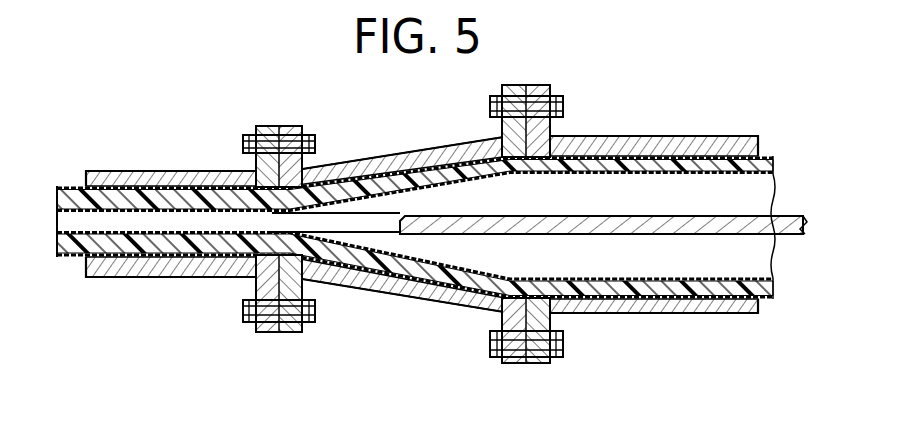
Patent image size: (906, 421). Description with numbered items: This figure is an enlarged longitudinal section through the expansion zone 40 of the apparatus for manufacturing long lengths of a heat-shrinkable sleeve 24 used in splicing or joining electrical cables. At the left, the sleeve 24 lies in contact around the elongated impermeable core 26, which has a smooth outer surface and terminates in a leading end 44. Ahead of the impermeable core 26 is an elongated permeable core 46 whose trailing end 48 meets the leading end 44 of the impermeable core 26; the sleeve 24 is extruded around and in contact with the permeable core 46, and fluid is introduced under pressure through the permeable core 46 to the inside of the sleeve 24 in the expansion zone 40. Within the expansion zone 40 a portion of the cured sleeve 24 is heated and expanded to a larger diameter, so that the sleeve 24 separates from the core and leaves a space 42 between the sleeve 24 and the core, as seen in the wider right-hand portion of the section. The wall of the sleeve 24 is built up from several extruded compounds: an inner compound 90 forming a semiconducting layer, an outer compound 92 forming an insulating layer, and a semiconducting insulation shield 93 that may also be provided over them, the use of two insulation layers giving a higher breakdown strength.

The heat-shrinkable sleeve 24 is at (733, 162).
The impermeable core 26 is at (364, 222).
The expansion zone 40 is at (388, 340).
The space 42 is at (541, 267).
The leading end 44 is at (415, 214).
The permeable core 46 is at (654, 210).
The trailing end 48 is at (400, 232).
The inner compound 90 is at (697, 280).
The outer compound 92 is at (766, 289).
The semiconducting insulation shield 93 is at (712, 152).